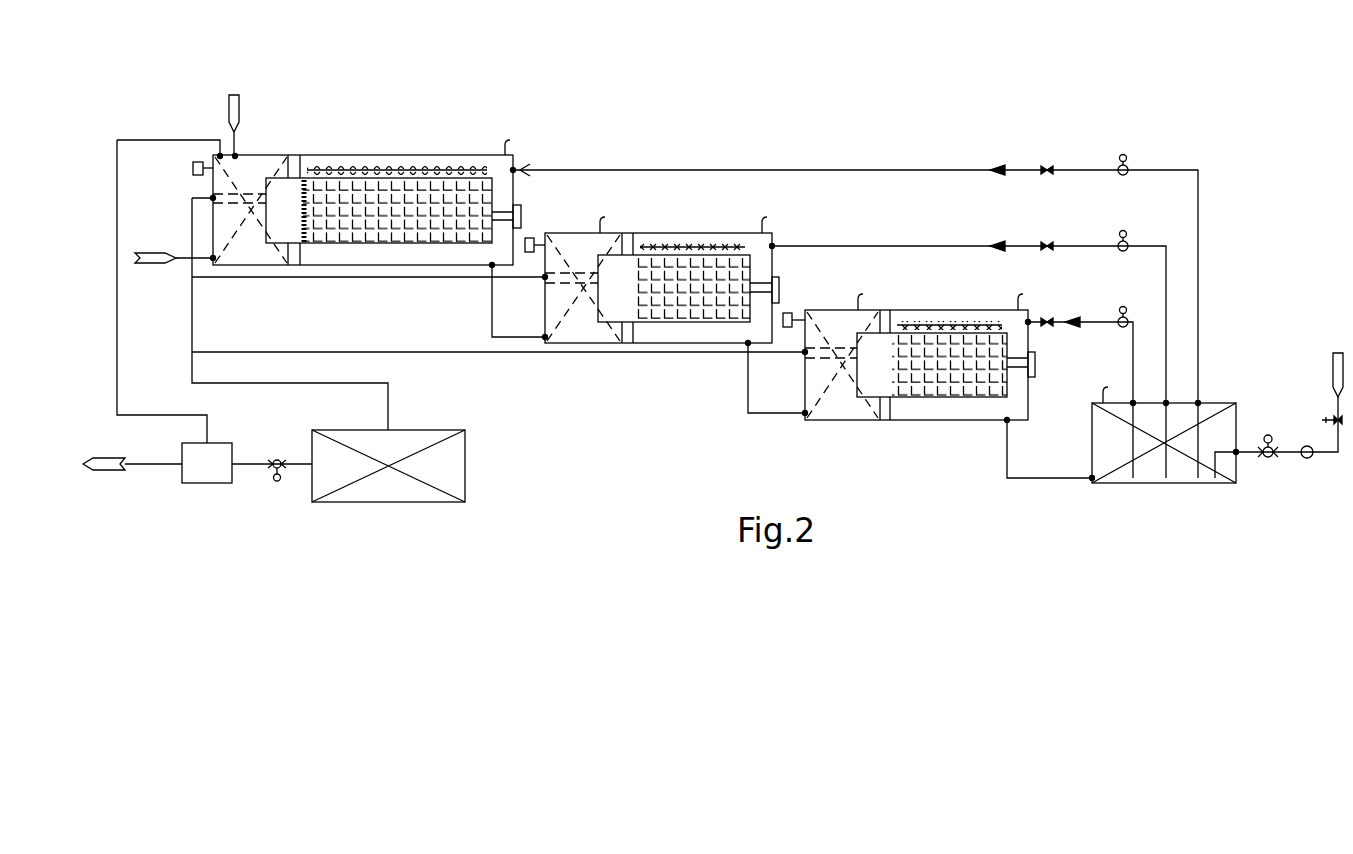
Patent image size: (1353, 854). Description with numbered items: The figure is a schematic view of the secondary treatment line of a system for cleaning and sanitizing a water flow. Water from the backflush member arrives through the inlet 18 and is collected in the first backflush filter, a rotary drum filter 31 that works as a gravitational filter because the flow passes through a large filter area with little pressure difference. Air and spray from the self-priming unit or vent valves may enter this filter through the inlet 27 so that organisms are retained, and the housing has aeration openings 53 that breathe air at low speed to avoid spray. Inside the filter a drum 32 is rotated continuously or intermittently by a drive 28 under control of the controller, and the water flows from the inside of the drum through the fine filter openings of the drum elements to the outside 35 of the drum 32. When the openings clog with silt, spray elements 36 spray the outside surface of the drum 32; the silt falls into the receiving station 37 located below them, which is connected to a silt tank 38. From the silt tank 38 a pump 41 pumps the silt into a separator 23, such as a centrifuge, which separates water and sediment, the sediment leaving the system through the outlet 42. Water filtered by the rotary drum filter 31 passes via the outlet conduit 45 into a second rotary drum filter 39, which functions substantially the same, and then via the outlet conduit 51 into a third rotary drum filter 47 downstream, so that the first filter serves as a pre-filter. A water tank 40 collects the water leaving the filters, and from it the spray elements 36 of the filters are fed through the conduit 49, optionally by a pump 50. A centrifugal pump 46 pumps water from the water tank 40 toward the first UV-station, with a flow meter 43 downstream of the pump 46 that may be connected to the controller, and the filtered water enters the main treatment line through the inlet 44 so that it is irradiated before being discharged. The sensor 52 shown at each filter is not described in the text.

The inlet 18 is at (133, 260).
The separator 23 is at (205, 475).
The inlet 27 is at (229, 92).
The drive 28 is at (513, 168).
The rotary drum filter 31 is at (459, 279).
The drum 32 is at (417, 186).
The outside of the drum 35 is at (379, 223).
The spray elements 36 is at (375, 167).
The receiving station 37 is at (248, 192).
The silt tank 38 is at (378, 485).
The second rotary drum filter 39 is at (675, 345).
The water tank 40 is at (1175, 472).
The pump 41 is at (277, 470).
The outlet 42 is at (109, 463).
The flow meter 43 is at (1307, 460).
The inlet 44 is at (1333, 377).
The outlet conduit 45 is at (516, 345).
The pump 46 is at (1268, 460).
The third rotary drum filter 47 is at (940, 420).
The conduit 49 is at (1103, 322).
The pump 50 is at (1128, 320).
The outlet conduit 51 is at (775, 415).
The sensor 52 is at (195, 162).
The aeration openings 53 is at (268, 150).